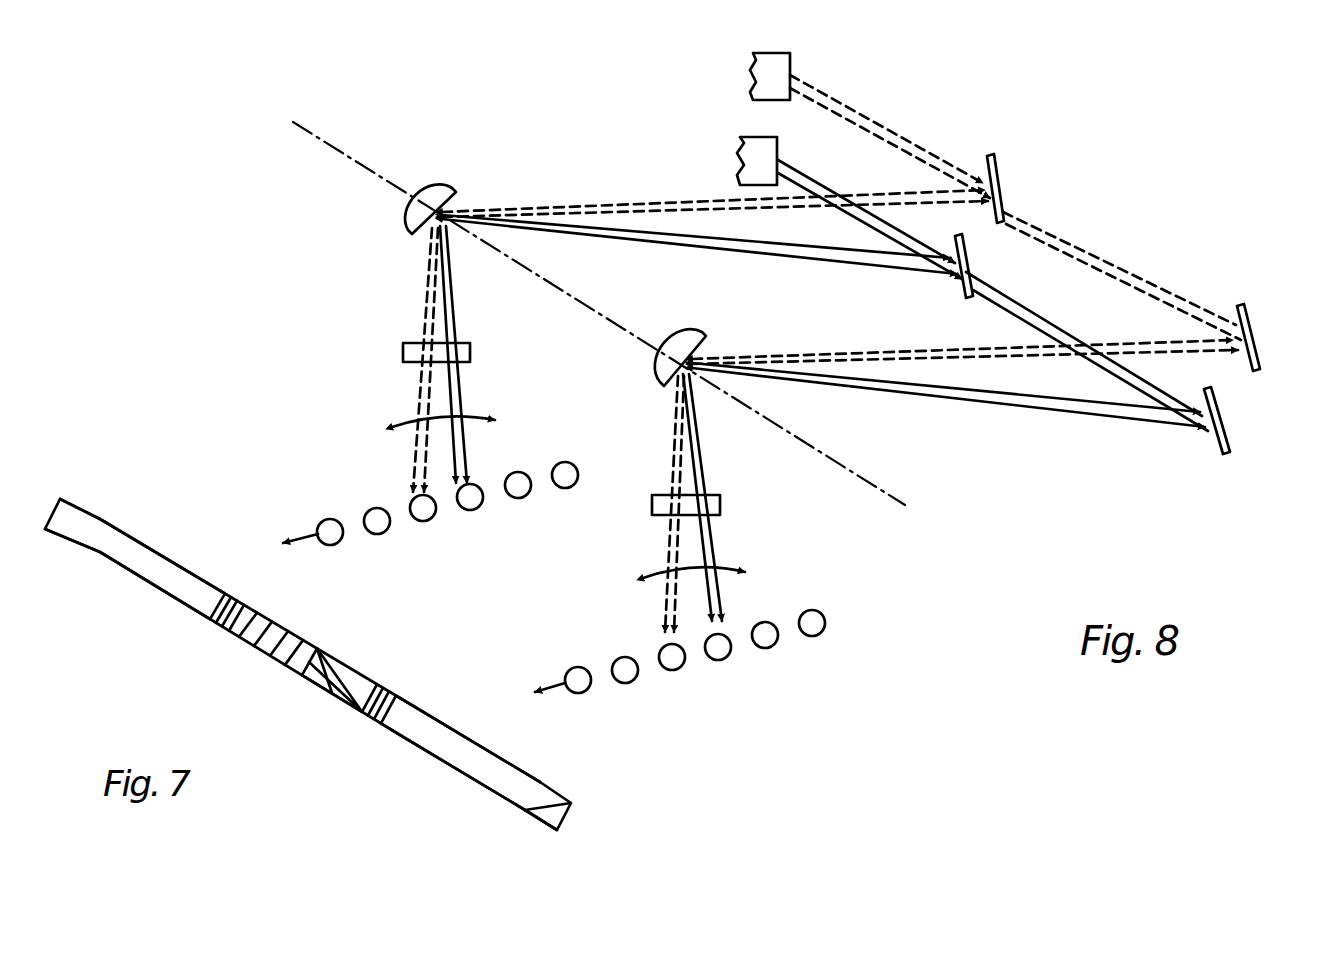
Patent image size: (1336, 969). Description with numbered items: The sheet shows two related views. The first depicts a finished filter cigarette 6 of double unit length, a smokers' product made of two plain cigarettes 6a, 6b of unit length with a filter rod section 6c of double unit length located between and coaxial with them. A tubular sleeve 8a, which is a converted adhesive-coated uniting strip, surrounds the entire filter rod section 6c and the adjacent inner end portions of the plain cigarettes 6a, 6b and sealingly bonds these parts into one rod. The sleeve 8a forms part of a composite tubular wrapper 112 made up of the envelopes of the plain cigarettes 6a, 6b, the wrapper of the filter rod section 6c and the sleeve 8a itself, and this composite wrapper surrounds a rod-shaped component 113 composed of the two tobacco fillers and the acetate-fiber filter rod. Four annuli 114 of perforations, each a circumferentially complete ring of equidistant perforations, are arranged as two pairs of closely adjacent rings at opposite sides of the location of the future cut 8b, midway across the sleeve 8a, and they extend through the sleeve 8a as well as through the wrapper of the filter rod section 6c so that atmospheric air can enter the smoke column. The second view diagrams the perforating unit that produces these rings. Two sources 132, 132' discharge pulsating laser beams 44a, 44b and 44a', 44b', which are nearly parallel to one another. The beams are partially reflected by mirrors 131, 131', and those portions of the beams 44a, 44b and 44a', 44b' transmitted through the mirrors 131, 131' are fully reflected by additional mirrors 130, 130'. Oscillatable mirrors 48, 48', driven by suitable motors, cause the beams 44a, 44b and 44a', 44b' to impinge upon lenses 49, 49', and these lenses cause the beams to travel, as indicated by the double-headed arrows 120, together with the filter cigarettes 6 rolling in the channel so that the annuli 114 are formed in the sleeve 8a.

In FIG. 7, the filter cigarette 6 is at (297, 720).
In FIG. 8, the filter cigarette 6 is at (518, 492).
In FIG. 7, the plain cigarette 6a is at (455, 755).
In FIG. 7, the plain cigarette 6b is at (107, 530).
In FIG. 7, the filter rod section 6c is at (303, 646).
In FIG. 7, the sleeve 8a is at (265, 658).
In FIG. 7, the cut 8b is at (330, 692).
In FIG. 7, the composite tubular wrapper 112 is at (540, 788).
In FIG. 7, the rod-shaped component 113 is at (560, 826).
In FIG. 7, the annuli of perforations 114 is at (240, 610).
In FIG. 8, the oscillatable mirror 48 is at (442, 179).
In FIG. 8, the oscillatable mirror 48' is at (714, 345).
In FIG. 8, the lens 49 is at (461, 359).
In FIG. 8, the lens 49' is at (713, 503).
In FIG. 8, the double-headed arrows 120 is at (467, 423).
In FIG. 8, the laser beam 44a is at (713, 240).
In FIG. 8, the laser beam 44b is at (715, 254).
In FIG. 8, the laser beam 44a' is at (962, 405).
In FIG. 8, the laser beam 44b' is at (965, 403).
In FIG. 8, the additional mirror 130 is at (1242, 418).
In FIG. 8, the additional mirror 130' is at (1271, 335).
In FIG. 8, the mirror 131 is at (1081, 332).
In FIG. 8, the mirror 131' is at (1114, 247).
In FIG. 8, the source 132 is at (823, 197).
In FIG. 8, the source 132' is at (870, 117).